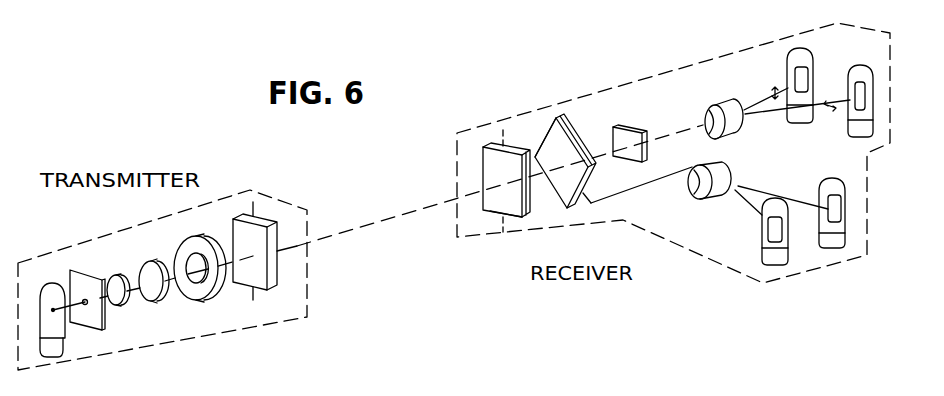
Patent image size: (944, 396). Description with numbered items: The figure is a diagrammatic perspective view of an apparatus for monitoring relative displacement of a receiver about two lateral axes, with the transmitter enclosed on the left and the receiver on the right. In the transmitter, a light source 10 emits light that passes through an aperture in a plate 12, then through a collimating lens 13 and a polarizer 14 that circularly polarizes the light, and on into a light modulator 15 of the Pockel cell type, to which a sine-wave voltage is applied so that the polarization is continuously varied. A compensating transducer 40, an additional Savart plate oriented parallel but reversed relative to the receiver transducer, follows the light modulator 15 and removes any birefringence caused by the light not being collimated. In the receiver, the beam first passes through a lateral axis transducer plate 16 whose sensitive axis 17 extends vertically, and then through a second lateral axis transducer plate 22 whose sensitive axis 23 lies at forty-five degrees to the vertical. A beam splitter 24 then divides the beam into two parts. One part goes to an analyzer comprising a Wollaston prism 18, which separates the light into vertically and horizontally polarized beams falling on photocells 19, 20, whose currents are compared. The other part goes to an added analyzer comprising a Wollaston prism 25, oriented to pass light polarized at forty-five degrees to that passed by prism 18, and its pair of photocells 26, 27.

The light source 10 is at (58, 330).
The plate 12 is at (101, 332).
The collimating lens 13 is at (126, 307).
The polarizer 14 is at (161, 300).
The light modulator 15 is at (211, 297).
The compensating transducer 40 is at (277, 275).
The lateral axis transducer plate 16 is at (513, 220).
The sensitive axis 17 is at (503, 142).
The second lateral axis transducer plate 22 is at (565, 116).
The sensitive axis 23 is at (545, 131).
The beam splitter 24 is at (631, 127).
The Wollaston prism 18 is at (714, 105).
The photocell 19 is at (808, 60).
The photocell 20 is at (863, 78).
The Wollaston prism 25 is at (705, 194).
The photocell 26 is at (783, 250).
The photocell 27 is at (834, 226).